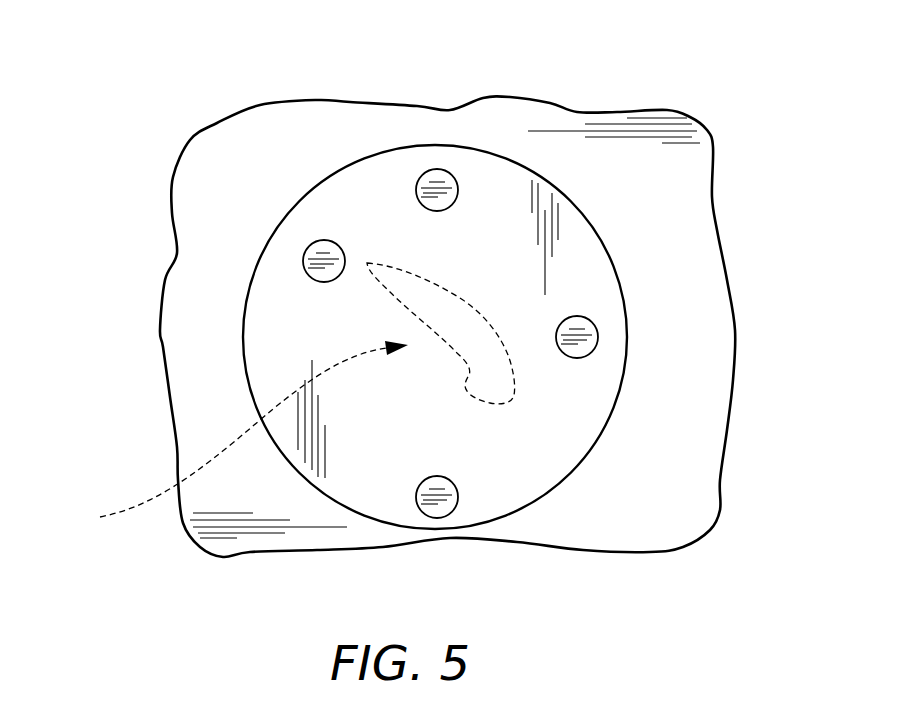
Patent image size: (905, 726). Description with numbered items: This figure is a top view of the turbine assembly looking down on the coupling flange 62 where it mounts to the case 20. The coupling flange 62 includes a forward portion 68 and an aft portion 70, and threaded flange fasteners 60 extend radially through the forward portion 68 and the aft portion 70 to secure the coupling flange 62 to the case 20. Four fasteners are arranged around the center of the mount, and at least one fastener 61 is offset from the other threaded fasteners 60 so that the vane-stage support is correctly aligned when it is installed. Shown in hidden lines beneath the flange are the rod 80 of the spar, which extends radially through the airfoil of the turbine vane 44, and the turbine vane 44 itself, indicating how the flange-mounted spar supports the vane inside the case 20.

The case 20 is at (683, 562).
The turbine vane 44 is at (229, 437).
The threaded flange fasteners 60 is at (437, 169).
The offset fastener 61 is at (323, 240).
The coupling flange 62 is at (200, 185).
The forward portion 68 is at (245, 362).
The aft portion 70 is at (628, 333).
The rod 80 is at (397, 299).